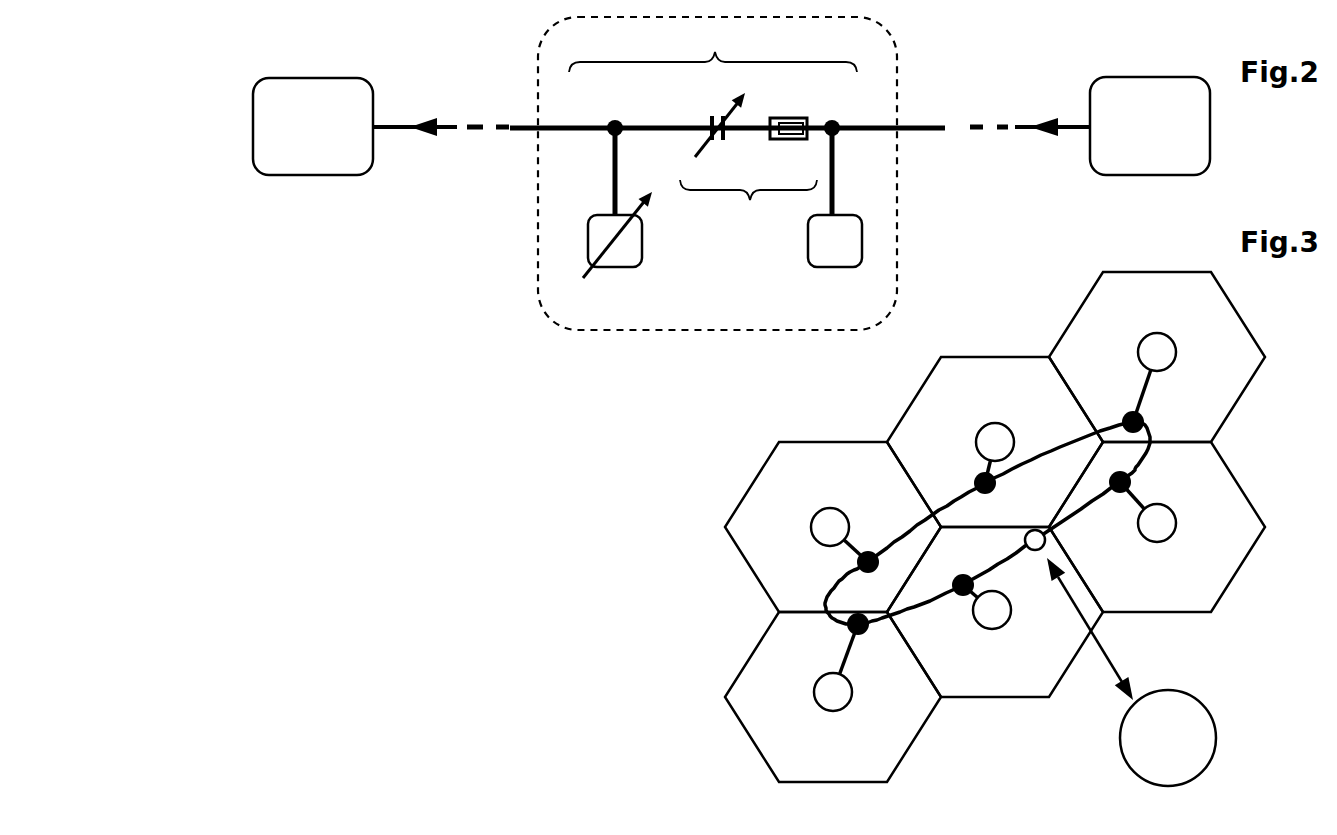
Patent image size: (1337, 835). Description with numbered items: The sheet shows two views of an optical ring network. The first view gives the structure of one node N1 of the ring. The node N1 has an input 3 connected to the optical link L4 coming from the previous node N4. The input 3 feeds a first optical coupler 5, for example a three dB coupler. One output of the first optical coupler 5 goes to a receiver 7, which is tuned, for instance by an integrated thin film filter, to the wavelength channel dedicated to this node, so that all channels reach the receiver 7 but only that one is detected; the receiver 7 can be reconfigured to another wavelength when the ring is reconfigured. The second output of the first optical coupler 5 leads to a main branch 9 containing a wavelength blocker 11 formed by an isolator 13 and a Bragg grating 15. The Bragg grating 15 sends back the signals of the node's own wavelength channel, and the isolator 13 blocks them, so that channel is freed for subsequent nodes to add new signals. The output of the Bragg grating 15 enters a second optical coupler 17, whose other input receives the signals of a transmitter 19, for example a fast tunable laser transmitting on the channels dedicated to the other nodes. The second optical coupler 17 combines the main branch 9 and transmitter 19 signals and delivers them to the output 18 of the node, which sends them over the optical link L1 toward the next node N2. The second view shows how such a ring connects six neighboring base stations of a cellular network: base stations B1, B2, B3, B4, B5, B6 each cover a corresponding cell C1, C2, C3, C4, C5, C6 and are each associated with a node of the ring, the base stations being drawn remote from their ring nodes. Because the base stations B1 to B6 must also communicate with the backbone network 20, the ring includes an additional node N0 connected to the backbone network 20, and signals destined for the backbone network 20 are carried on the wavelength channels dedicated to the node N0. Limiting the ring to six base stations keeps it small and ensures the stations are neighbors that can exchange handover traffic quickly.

In FIG. 2, the input 3 is at (912, 130).
In FIG. 2, the first optical coupler 5 is at (836, 136).
In FIG. 2, the receiver 7 is at (810, 230).
In FIG. 2, the main branch 9 is at (726, 130).
In FIG. 2, the wavelength blocker 11 is at (732, 161).
In FIG. 2, the isolator 13 is at (792, 140).
In FIG. 2, the Bragg grating 15 is at (708, 118).
In FIG. 2, the second optical coupler 17 is at (610, 122).
In FIG. 2, the output 18 is at (532, 126).
In FIG. 2, the transmitter 19 is at (642, 232).
In FIG. 2, the node N1 is at (583, 330).
In FIG. 2, the next node N2 is at (313, 126).
In FIG. 2, the previous node N4 is at (1150, 126).
In FIG. 2, the optical link L1 is at (441, 109).
In FIG. 2, the optical link L4 is at (1030, 109).
In FIG. 3, the cell C1 is at (995, 612).
In FIG. 3, the cell C2 is at (833, 697).
In FIG. 3, the cell C3 is at (833, 527).
In FIG. 3, the cell C4 is at (995, 442).
In FIG. 3, the cell C5 is at (1157, 357).
In FIG. 3, the cell C6 is at (1157, 527).
In FIG. 3, the base station B1 is at (994, 625).
In FIG. 3, the base station B2 is at (850, 685).
In FIG. 3, the base station B3 is at (823, 515).
In FIG. 3, the base station B4 is at (977, 443).
In FIG. 3, the base station B5 is at (1165, 346).
In FIG. 3, the base station B6 is at (1165, 516).
In FIG. 3, the additional node N0 is at (1038, 552).
In FIG. 3, the backbone network 20 is at (1207, 700).